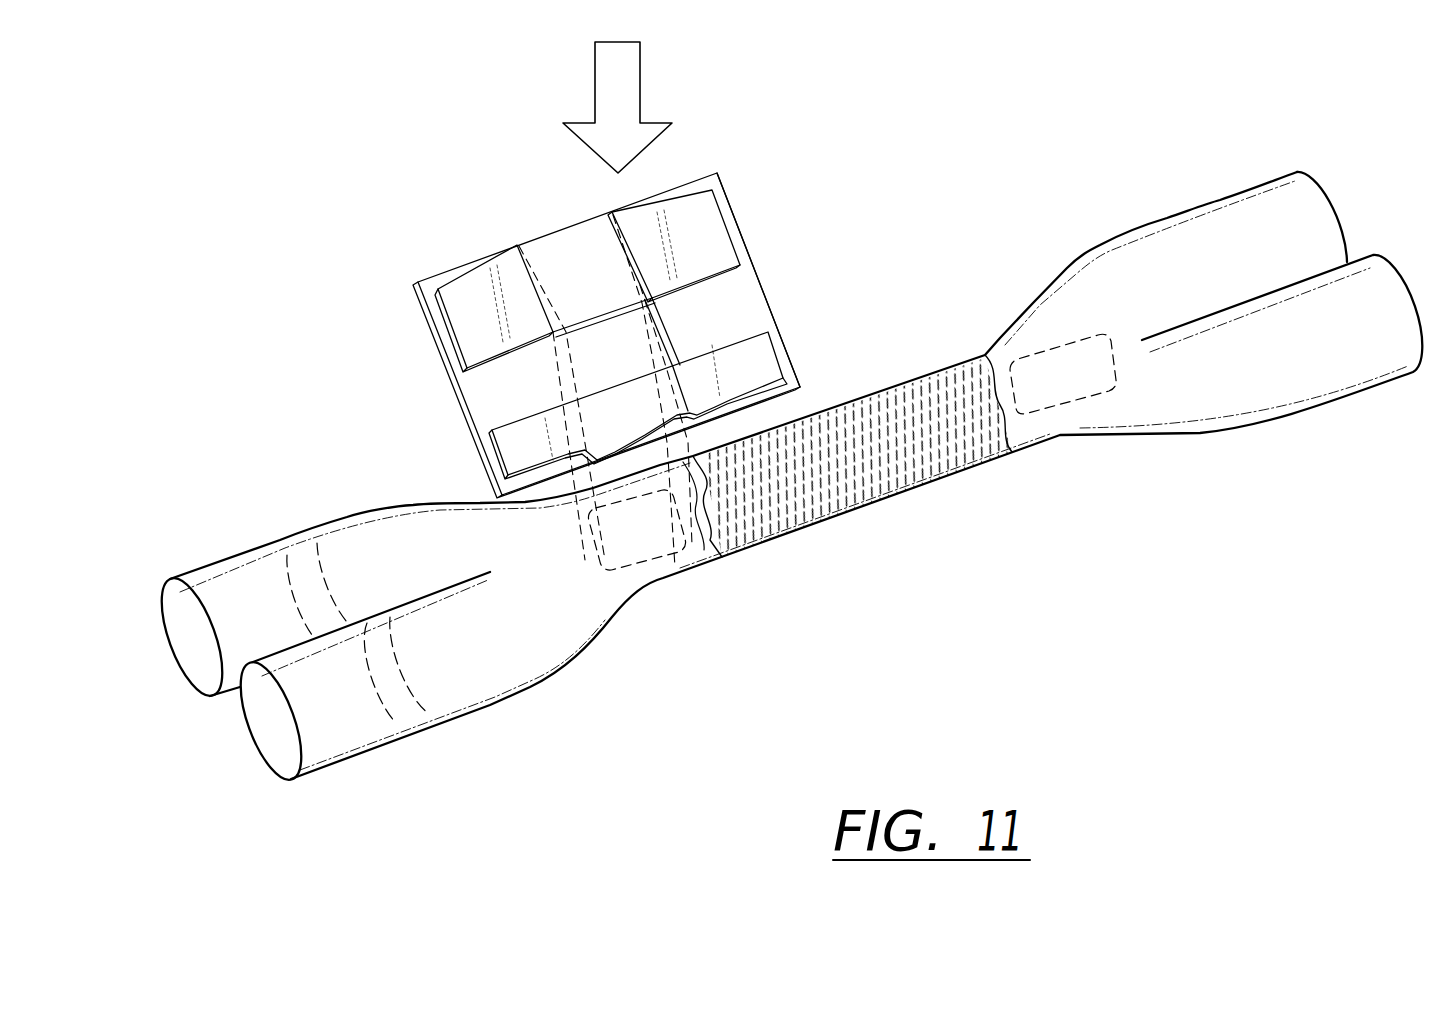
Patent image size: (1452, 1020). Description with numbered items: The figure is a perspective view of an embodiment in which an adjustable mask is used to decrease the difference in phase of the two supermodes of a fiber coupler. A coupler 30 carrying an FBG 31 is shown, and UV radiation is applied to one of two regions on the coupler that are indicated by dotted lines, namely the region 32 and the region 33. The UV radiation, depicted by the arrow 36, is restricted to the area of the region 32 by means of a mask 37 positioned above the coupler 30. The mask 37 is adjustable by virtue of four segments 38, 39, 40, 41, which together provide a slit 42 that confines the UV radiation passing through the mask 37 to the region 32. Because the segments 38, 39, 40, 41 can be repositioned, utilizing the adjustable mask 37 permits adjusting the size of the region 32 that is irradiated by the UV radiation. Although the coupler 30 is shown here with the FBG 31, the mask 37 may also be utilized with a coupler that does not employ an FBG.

The coupler 30 is at (720, 605).
The FBG 31 is at (847, 520).
The region 32 is at (628, 588).
The region 33 is at (1081, 398).
The arrow 36 is at (603, 103).
The mask 37 is at (750, 222).
The segment 38 is at (467, 270).
The segment 39 is at (572, 243).
The segment 40 is at (755, 368).
The segment 41 is at (742, 303).
The slit 42 is at (614, 367).